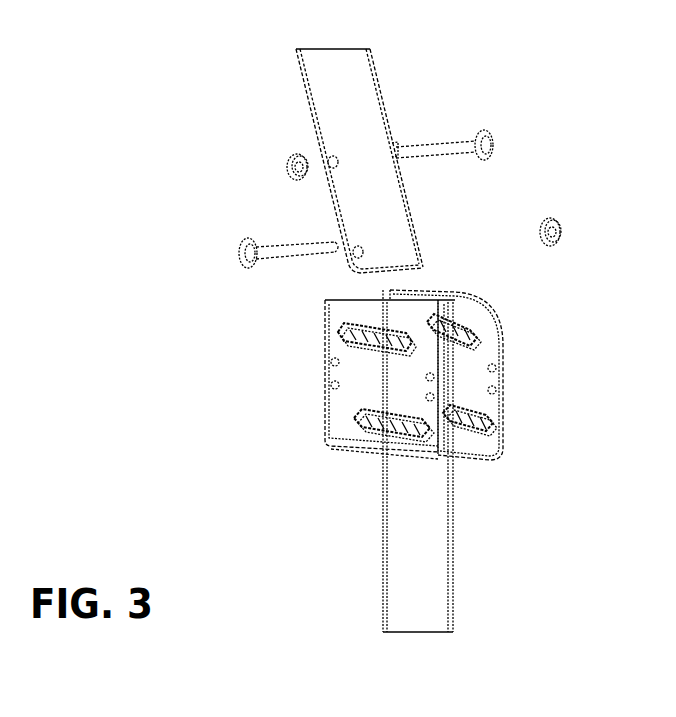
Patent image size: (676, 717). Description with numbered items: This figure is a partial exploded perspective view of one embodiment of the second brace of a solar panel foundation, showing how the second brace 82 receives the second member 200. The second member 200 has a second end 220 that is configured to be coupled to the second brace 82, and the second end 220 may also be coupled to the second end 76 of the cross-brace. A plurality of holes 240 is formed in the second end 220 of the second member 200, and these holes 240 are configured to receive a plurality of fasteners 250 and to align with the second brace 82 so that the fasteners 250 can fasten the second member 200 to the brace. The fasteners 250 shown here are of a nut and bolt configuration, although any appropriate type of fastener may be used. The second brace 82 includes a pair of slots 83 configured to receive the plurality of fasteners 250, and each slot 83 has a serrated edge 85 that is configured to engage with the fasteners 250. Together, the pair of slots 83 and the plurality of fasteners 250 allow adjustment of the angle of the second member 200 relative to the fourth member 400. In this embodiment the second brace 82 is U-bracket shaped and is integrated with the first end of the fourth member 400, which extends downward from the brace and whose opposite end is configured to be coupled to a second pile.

The second end of the cross-brace 76 is at (518, 302).
The second brace 82 is at (495, 378).
The pair of slots 83 is at (350, 333).
The serrated edge 85 is at (380, 414).
The second member 200 is at (374, 113).
The second end of the second member 220 is at (476, 218).
The plurality of holes 240 is at (358, 250).
The plurality of fasteners 250 is at (548, 234).
The fourth member 400 is at (443, 577).